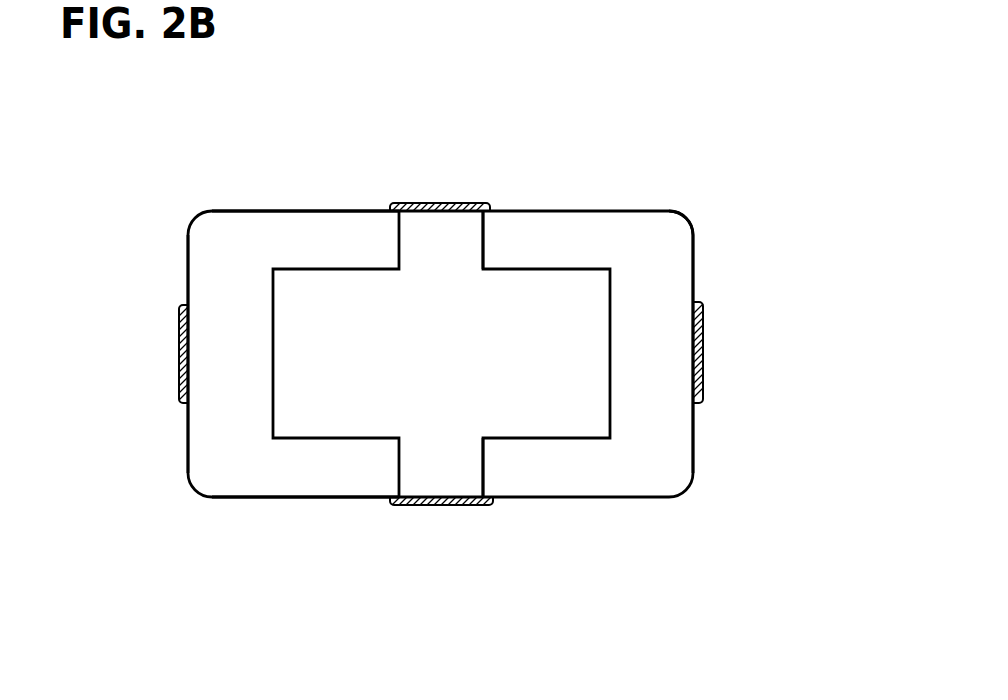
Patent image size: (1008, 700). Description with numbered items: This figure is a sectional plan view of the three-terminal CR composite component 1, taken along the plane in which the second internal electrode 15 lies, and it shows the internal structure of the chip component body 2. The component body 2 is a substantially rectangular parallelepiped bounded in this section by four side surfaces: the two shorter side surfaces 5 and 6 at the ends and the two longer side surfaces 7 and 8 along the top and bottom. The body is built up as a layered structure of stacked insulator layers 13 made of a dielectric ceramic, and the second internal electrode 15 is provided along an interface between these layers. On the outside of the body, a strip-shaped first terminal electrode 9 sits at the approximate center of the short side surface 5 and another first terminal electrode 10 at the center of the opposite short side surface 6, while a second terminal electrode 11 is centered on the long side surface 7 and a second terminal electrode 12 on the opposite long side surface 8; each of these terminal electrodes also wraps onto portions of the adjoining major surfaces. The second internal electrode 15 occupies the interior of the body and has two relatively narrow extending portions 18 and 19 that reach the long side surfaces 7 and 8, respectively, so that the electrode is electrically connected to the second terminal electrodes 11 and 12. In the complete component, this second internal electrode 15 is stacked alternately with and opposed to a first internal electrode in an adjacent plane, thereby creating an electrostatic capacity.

The three-terminal CR composite component 1 is at (109, 112).
The component body 2 is at (578, 208).
The side surface 5 is at (695, 288).
The side surface 6 is at (188, 266).
The side surface 7 is at (331, 211).
The side surface 8 is at (311, 498).
The first terminal electrode 9 is at (706, 353).
The first terminal electrode 10 is at (177, 354).
The second terminal electrode 11 is at (444, 200).
The second terminal electrode 12 is at (450, 509).
The insulator layer 13 is at (680, 259).
The second internal electrode 15 is at (596, 259).
The extending portion 18 is at (473, 243).
The extending portion 19 is at (474, 469).